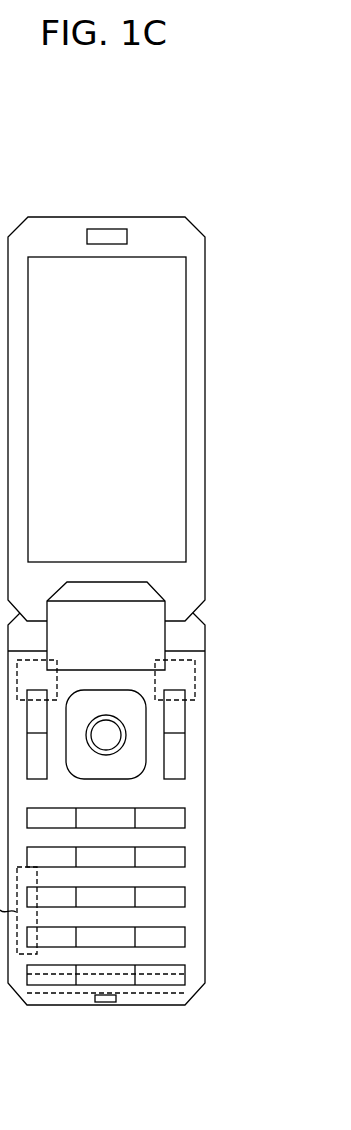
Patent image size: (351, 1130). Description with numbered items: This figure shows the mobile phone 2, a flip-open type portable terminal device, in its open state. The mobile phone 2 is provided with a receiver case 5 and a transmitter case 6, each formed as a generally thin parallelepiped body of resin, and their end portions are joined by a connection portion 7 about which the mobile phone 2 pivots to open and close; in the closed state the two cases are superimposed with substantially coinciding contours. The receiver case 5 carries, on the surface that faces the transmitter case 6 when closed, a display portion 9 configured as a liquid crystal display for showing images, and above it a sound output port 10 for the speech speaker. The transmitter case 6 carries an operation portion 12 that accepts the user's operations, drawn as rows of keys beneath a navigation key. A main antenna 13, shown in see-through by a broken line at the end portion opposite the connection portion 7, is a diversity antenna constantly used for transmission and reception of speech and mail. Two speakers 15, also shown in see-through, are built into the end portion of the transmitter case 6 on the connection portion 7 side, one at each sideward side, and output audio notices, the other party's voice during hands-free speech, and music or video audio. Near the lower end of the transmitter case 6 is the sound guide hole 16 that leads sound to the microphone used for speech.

The mobile phone 2 is at (105, 168).
The receiver case 5 is at (200, 388).
The transmitter case 6 is at (200, 763).
The connection portion 7 is at (157, 632).
The display portion 9 is at (177, 321).
The sound output port 10 is at (112, 234).
The operation portion 12 is at (197, 870).
The main antenna 13 is at (157, 993).
The speakers 15 is at (197, 677).
The sound guide hole 16 is at (109, 1005).